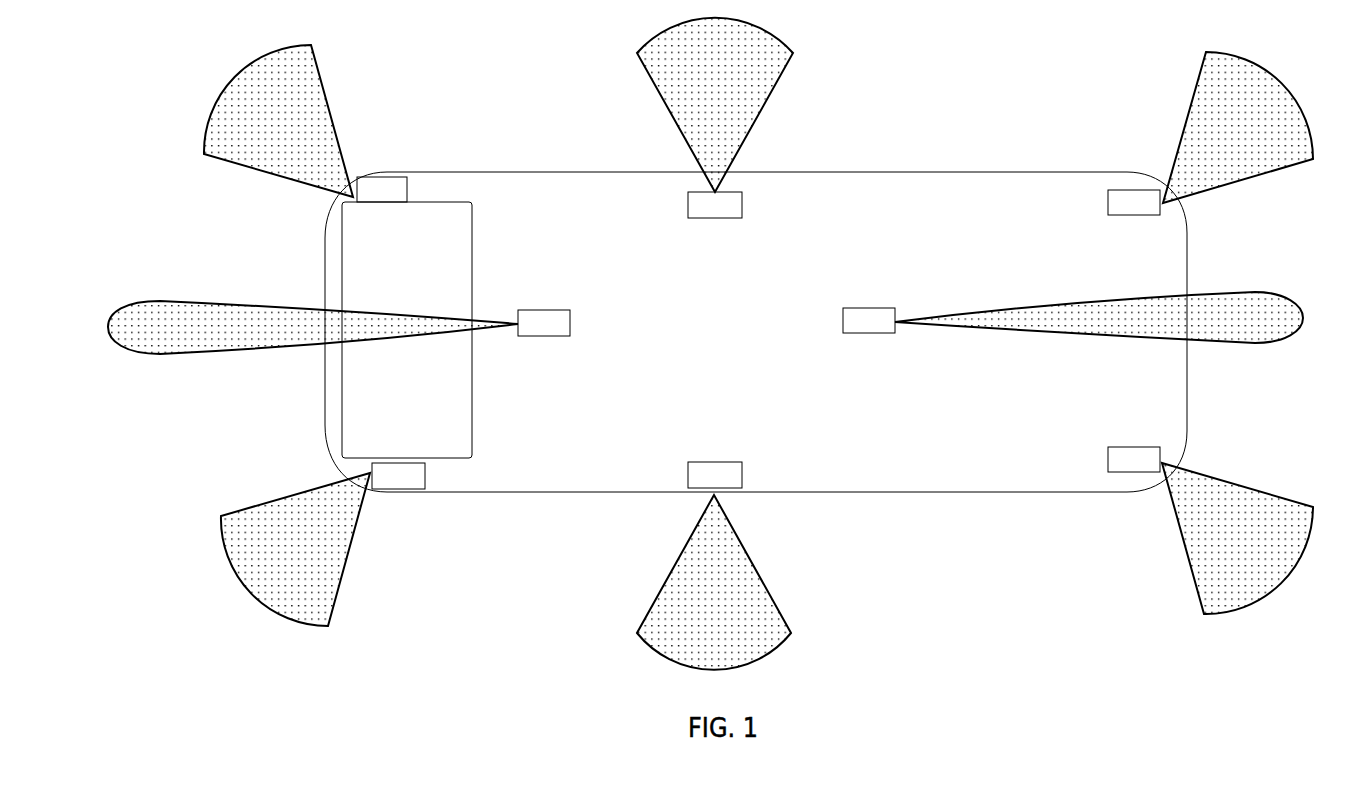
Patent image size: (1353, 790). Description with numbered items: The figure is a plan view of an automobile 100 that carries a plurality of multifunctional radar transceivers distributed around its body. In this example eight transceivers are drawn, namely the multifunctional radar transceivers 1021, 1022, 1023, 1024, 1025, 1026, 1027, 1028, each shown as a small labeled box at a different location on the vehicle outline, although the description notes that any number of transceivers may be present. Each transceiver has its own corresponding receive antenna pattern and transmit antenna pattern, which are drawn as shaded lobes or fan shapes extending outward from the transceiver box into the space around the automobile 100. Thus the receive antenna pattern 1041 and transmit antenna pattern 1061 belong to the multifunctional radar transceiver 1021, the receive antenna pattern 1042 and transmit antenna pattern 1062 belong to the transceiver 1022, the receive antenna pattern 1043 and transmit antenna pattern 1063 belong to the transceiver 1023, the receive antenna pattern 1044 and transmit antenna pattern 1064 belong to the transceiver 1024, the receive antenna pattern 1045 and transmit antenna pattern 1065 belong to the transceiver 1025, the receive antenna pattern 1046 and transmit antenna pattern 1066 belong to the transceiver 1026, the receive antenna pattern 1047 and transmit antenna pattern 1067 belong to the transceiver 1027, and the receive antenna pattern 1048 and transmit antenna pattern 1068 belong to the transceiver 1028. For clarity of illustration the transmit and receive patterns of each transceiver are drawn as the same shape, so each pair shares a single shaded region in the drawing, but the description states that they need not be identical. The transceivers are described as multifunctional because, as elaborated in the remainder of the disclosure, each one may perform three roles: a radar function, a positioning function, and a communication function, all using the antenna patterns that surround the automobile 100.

The automobile 100 is at (621, 172).
The multifunctional radar transceiver 1021 is at (1134, 202).
The multifunctional radar transceiver 1022 is at (869, 320).
The multifunctional radar transceiver 1023 is at (1134, 459).
The multifunctional radar transceiver 1024 is at (382, 189).
The multifunctional radar transceiver 1025 is at (544, 323).
The multifunctional radar transceiver 1026 is at (398, 476).
The multifunctional radar transceiver 1027 is at (715, 205).
The multifunctional radar transceiver 1028 is at (715, 475).
The receive antenna pattern 1041 is at (1200, 127).
The receive antenna pattern 1042 is at (1099, 303).
The receive antenna pattern 1043 is at (1239, 538).
The receive antenna pattern 1044 is at (316, 121).
The receive antenna pattern 1045 is at (313, 313).
The receive antenna pattern 1046 is at (277, 549).
The receive antenna pattern 1047 is at (761, 105).
The receive antenna pattern 1048 is at (761, 582).
The transmit antenna pattern 1061 is at (1238, 127).
The transmit antenna pattern 1062 is at (1099, 317).
The transmit antenna pattern 1063 is at (1237, 538).
The transmit antenna pattern 1064 is at (278, 121).
The transmit antenna pattern 1065 is at (313, 327).
The transmit antenna pattern 1066 is at (295, 549).
The transmit antenna pattern 1067 is at (715, 105).
The transmit antenna pattern 1068 is at (714, 582).